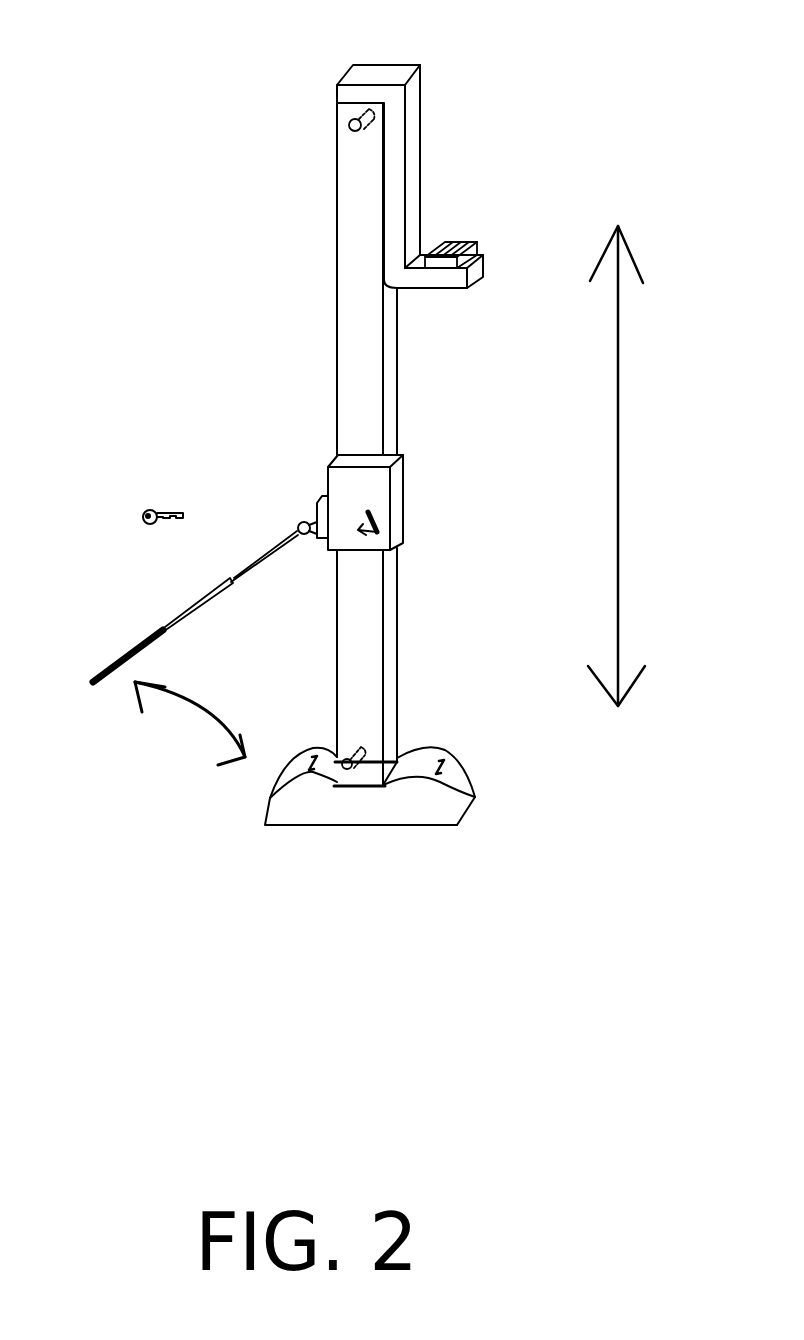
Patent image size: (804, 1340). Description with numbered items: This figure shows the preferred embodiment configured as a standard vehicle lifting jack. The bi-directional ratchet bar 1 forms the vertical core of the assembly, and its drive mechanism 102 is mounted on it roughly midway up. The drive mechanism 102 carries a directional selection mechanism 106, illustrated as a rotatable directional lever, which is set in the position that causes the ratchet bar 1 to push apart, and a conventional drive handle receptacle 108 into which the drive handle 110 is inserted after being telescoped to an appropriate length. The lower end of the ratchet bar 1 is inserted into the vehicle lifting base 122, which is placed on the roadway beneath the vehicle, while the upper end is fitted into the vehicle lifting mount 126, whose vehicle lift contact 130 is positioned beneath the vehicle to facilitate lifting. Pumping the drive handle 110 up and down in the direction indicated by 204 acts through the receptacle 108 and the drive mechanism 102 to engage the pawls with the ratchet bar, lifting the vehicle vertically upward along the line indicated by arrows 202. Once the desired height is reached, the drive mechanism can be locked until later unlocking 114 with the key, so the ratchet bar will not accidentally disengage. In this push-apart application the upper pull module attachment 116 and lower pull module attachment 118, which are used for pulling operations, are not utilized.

The ratchet bar 1 is at (287, 342).
The drive mechanism 102 is at (370, 485).
The directional selection mechanism 106 is at (377, 523).
The drive handle receptacle 108 is at (305, 525).
The drive handle 110 is at (208, 597).
The unlocking 114 is at (148, 507).
The upper pull module attachment 116 is at (350, 120).
The lower pull module attachment 118 is at (352, 748).
The vehicle lifting base 122 is at (400, 860).
The vehicle lifting mount 126 is at (445, 120).
The vehicle lift contact 130 is at (460, 247).
The arrows 202 is at (618, 516).
The direction of handle pumping 204 is at (195, 738).